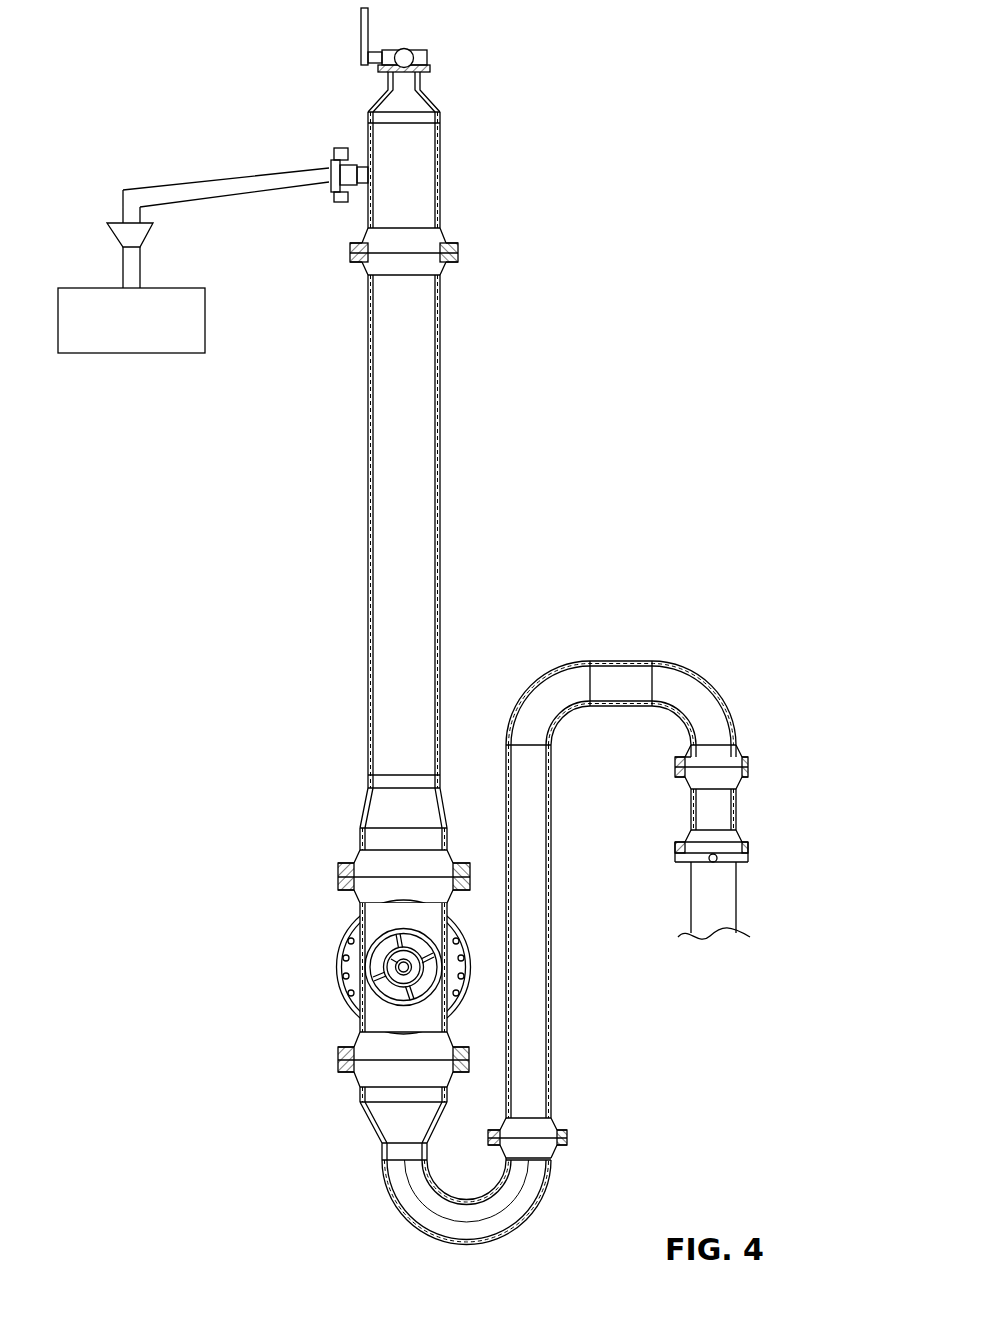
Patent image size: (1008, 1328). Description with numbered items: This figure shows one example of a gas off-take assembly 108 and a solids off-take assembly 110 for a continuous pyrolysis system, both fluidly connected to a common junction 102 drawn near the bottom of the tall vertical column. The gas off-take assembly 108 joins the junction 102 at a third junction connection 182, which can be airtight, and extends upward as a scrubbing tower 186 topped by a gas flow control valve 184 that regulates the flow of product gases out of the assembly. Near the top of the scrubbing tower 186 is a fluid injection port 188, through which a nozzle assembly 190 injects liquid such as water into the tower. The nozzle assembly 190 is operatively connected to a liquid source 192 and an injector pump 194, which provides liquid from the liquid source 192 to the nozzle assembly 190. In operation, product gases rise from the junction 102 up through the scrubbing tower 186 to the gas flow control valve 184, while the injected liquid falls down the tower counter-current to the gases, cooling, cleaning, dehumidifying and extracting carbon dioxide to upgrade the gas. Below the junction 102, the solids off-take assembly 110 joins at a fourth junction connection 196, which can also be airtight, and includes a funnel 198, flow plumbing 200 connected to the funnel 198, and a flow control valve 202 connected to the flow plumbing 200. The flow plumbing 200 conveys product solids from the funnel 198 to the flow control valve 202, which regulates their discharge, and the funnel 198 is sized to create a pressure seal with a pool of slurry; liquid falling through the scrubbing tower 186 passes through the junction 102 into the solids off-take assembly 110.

The junction 102 is at (298, 957).
The gas off-take assembly 108 is at (318, 386).
The solids off-take assembly 110 is at (320, 1096).
The third junction connection 182 is at (338, 870).
The gas flow control valve 184 is at (430, 68).
The scrubbing tower 186 is at (440, 483).
The fluid injection port 188 is at (365, 160).
The nozzle assembly 190 is at (340, 205).
The liquid source 192 is at (205, 322).
The injector pump 194 is at (150, 236).
The fourth junction connection 196 is at (338, 1062).
The funnel 198 is at (372, 1125).
The flow plumbing 200 is at (548, 1193).
The flow control valve 202 is at (750, 855).